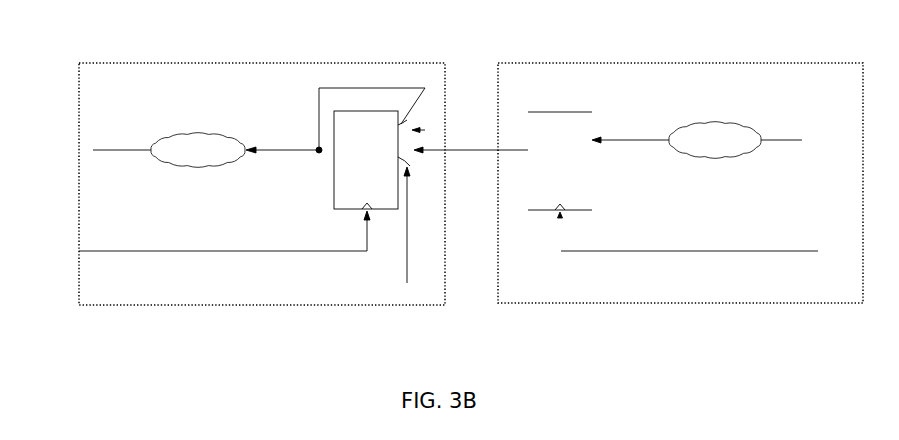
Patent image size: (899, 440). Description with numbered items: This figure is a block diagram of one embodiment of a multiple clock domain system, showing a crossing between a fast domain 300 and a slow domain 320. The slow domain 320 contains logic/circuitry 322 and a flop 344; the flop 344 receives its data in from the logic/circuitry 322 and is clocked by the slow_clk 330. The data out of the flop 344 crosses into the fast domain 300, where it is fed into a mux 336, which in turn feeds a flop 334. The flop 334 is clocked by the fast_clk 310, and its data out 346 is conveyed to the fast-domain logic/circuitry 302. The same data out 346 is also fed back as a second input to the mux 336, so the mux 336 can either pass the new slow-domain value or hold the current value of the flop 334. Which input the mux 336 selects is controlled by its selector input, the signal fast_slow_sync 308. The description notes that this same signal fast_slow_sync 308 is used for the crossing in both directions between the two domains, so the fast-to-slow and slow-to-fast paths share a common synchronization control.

The fast domain 300 is at (258, 63).
The logic/circuitry 302 is at (169, 150).
The fast_slow_sync 308 is at (122, 285).
The fast_clk 310 is at (118, 250).
The slow domain 320 is at (683, 63).
The logic/circuitry 322 is at (697, 140).
The slow_clk 330 is at (752, 250).
The flop 334 is at (379, 160).
The mux 336 is at (425, 88).
The flop 344 is at (503, 165).
The data out 346 is at (270, 152).